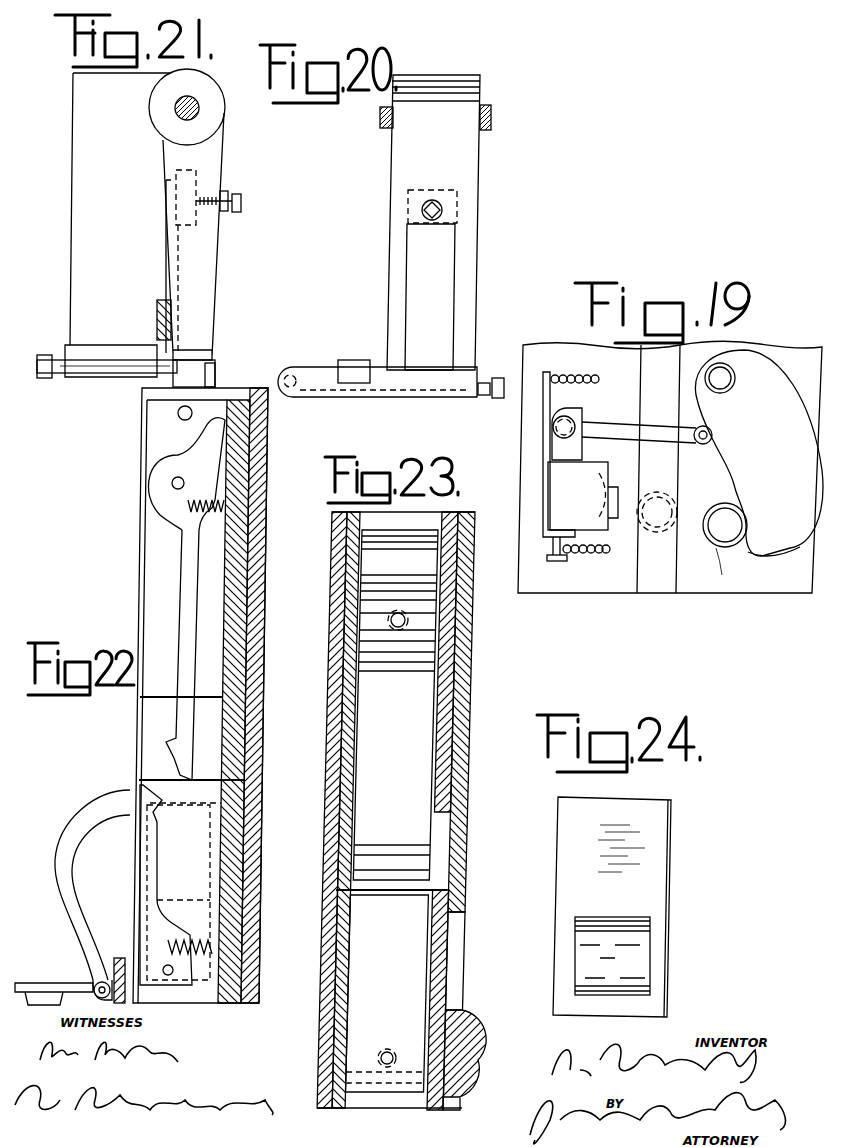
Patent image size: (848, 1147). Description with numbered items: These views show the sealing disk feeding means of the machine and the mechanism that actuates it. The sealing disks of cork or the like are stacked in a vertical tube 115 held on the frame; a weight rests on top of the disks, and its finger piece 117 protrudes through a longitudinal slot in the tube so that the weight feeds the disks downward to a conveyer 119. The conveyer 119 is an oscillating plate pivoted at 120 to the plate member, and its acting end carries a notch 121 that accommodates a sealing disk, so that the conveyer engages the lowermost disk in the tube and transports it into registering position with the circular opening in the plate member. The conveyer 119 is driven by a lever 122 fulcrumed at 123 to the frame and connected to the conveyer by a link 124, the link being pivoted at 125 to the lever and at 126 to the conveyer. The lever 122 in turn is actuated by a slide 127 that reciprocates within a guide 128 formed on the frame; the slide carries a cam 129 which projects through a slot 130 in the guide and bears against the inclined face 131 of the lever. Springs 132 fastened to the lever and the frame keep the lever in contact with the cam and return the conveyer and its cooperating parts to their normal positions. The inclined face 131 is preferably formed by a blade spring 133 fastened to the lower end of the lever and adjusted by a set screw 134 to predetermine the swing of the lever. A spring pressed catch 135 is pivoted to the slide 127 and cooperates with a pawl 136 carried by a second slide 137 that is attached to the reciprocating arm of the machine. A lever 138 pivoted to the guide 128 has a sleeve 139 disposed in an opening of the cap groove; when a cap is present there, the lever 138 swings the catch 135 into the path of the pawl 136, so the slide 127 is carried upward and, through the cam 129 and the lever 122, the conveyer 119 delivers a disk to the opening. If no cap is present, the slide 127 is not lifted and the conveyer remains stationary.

In FIG. 19, the vertical tube 115 is at (718, 548).
In FIG. 19, the finger piece 117 is at (747, 518).
In FIG. 19, the conveyer 119 is at (741, 472).
In FIG. 19, the pivot 120 is at (724, 375).
In FIG. 19, the notch 121 is at (795, 548).
In FIG. 21, the lever 122 is at (200, 253).
In FIG. 20, the lever 122 is at (462, 156).
In FIG. 19, the lever 122 is at (596, 473).
In FIG. 21, the fulcrum 123 is at (200, 110).
In FIG. 21, the link 124 is at (101, 372).
In FIG. 20, the link 124 is at (391, 379).
In FIG. 19, the link 124 is at (652, 432).
In FIG. 19, the pivot 125 is at (541, 430).
In FIG. 19, the pivot 126 is at (713, 436).
In FIG. 22, the slide 127 is at (232, 869).
In FIG. 23, the slide 127 is at (439, 935).
In FIG. 24, the slide 127 is at (658, 866).
In FIG. 22, the guide 128 is at (253, 742).
In FIG. 23, the guide 128 is at (468, 744).
In FIG. 21, the cam 129 is at (164, 319).
In FIG. 22, the cam 129 is at (202, 977).
In FIG. 23, the cam 129 is at (478, 1052).
In FIG. 24, the cam 129 is at (637, 966).
In FIG. 22, the slot 130 is at (221, 803).
In FIG. 23, the slot 130 is at (456, 988).
In FIG. 21, the inclined face 131 is at (173, 277).
In FIG. 19, the inclined face 131 is at (608, 478).
In FIG. 19, the springs 132 is at (577, 372).
In FIG. 21, the blade spring 133 is at (167, 222).
In FIG. 20, the blade spring 133 is at (437, 266).
In FIG. 21, the set screw 134 is at (229, 200).
In FIG. 20, the set screw 134 is at (443, 210).
In FIG. 22, the spring pressed catch 135 is at (142, 878).
In FIG. 23, the spring pressed catch 135 is at (365, 968).
In FIG. 22, the pawl 136 is at (184, 727).
In FIG. 23, the pawl 136 is at (418, 830).
In FIG. 22, the slide 137 is at (238, 641).
In FIG. 23, the slide 137 is at (447, 676).
In FIG. 22, the lever 138 is at (68, 908).
In FIG. 22, the sleeve 139 is at (44, 990).